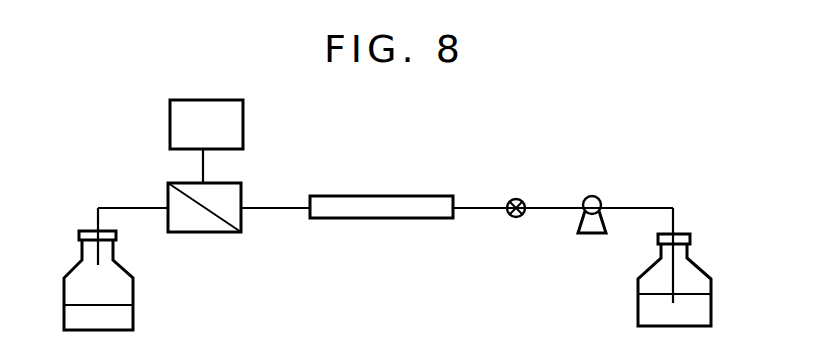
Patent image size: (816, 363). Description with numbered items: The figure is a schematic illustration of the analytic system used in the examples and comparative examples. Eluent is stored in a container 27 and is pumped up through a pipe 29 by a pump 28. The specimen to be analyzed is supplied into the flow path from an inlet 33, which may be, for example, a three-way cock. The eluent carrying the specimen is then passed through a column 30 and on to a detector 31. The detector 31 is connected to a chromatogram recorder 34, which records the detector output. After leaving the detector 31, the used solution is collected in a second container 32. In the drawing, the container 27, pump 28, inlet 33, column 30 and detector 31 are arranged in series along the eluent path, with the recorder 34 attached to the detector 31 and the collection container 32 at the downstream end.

The container 27 is at (638, 316).
The pump 28 is at (592, 233).
The pipe 29 is at (630, 208).
The column 30 is at (380, 196).
The detector 31 is at (202, 232).
The container 32 is at (133, 320).
The inlet 33 is at (520, 199).
The chromatogram recorder 34 is at (244, 130).